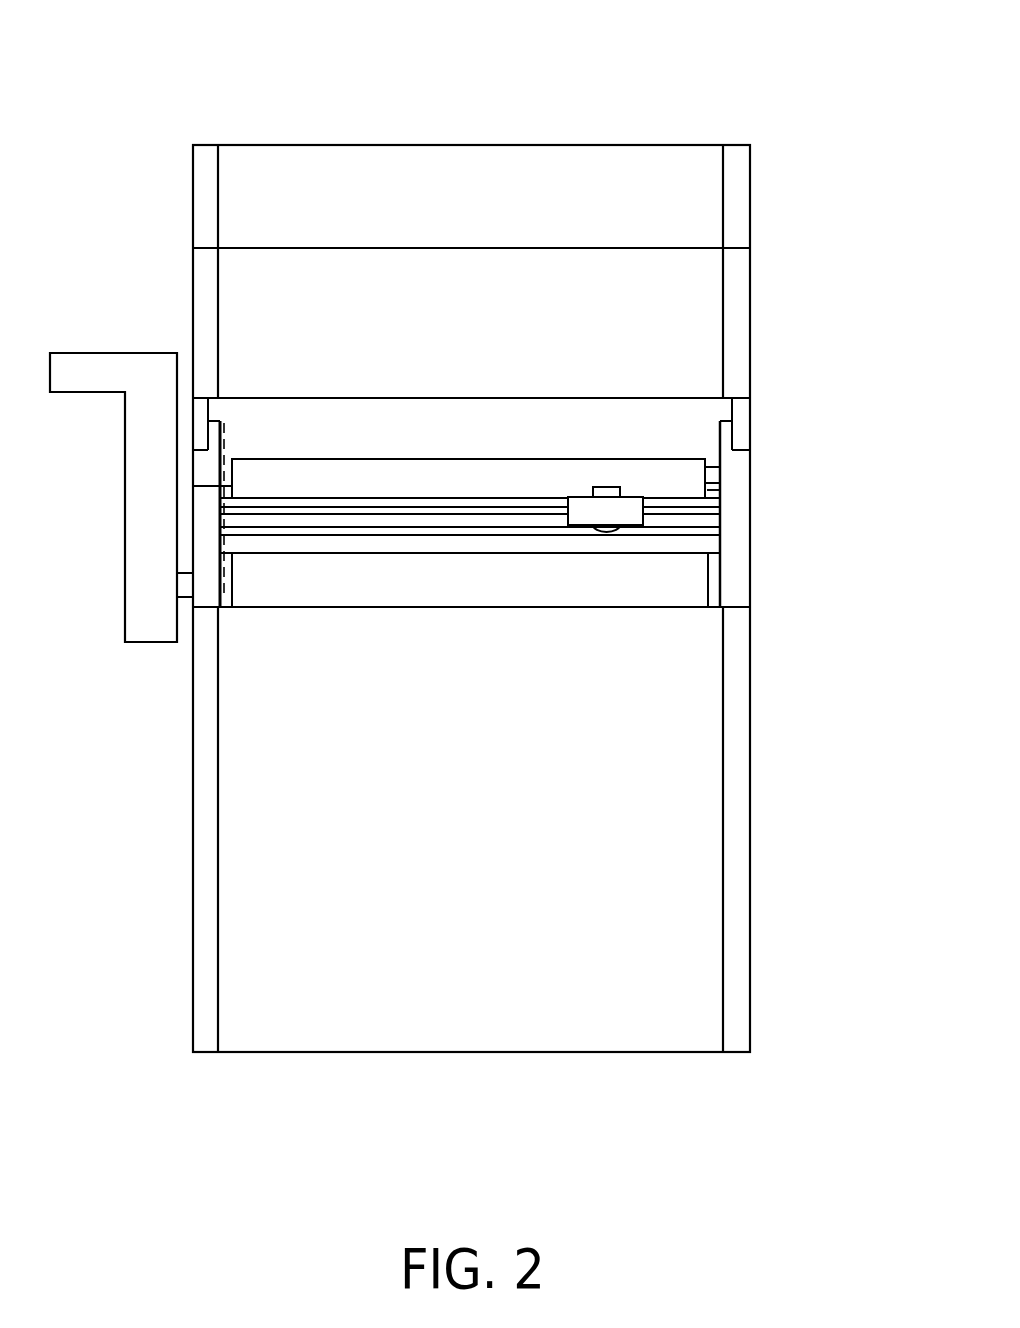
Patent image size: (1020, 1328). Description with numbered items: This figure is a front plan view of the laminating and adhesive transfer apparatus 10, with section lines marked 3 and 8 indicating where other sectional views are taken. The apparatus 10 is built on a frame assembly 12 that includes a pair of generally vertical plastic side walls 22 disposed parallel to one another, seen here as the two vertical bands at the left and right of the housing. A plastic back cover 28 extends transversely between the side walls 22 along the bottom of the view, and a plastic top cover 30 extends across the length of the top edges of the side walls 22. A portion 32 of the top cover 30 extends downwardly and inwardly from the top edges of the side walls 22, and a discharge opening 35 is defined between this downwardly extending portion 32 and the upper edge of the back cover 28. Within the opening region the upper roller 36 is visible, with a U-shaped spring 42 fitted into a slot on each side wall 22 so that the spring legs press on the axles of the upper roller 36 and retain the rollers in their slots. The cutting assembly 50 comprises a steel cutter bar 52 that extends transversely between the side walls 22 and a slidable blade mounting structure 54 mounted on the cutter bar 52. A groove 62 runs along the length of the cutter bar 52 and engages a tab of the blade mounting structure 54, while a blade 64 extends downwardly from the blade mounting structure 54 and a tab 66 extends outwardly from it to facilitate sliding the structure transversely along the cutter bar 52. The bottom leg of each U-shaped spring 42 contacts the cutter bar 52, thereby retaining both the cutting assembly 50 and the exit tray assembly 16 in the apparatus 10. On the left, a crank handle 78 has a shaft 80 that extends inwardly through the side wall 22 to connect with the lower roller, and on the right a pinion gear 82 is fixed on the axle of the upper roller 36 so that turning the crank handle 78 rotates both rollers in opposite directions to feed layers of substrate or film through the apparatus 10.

The section line 3- 3 is at (419, 590).
The section line 8- 8 is at (235, 432).
The laminating and adhesive transfer apparatus 10 is at (795, 147).
The frame assembly 12 is at (795, 901).
The exit tray assembly 16 is at (323, 632).
The side walls 22 is at (205, 922).
The back cover 28 is at (273, 1015).
The top cover 30 is at (492, 145).
The portion of the top cover 32 is at (608, 193).
The discharge opening 35 is at (695, 408).
The upper roller 36 is at (298, 459).
The U-shaped spring 42 is at (200, 470).
The cutting assembly 50 is at (642, 480).
The cutter bar 52 is at (401, 498).
The slidable blade mounting structure 54 is at (580, 503).
The groove 62 is at (498, 512).
The blade 64 is at (605, 532).
The tab 66 is at (605, 487).
The crank handle 78 is at (147, 453).
The shaft 80 is at (187, 587).
The pinion gear 82 is at (710, 490).